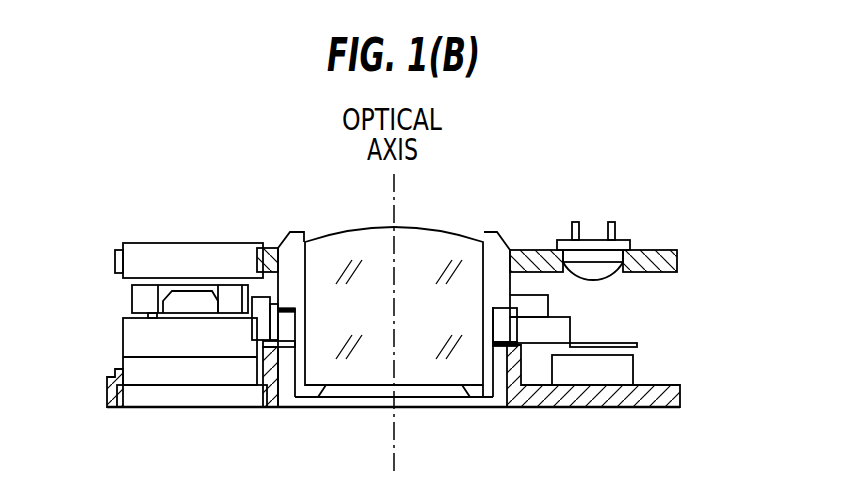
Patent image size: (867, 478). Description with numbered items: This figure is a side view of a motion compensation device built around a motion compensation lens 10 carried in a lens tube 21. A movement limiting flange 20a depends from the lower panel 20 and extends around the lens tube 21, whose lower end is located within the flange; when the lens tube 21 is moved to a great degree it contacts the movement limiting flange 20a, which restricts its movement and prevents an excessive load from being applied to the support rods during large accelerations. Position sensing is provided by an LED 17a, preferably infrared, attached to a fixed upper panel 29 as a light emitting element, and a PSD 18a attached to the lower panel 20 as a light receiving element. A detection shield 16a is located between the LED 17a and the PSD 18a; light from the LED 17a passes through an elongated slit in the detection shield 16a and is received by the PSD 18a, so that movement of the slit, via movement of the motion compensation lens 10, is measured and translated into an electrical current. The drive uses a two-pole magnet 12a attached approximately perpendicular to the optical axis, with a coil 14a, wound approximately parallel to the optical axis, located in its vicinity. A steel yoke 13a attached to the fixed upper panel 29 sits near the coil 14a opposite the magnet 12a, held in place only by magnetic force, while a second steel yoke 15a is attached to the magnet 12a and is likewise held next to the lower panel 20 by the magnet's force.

The motion compensation lens 10 is at (425, 244).
The lens tube 21 is at (497, 251).
The magnet 12a is at (145, 335).
The yoke 13a is at (180, 262).
The coil 14a is at (143, 300).
The yoke 15a is at (194, 372).
The detection shield 16a is at (630, 337).
The LED 17a is at (587, 257).
The PSD 18a is at (613, 370).
The lower panel 20 is at (665, 397).
The movement limiting flange 20a is at (521, 348).
The fixed upper panel 29 is at (660, 262).